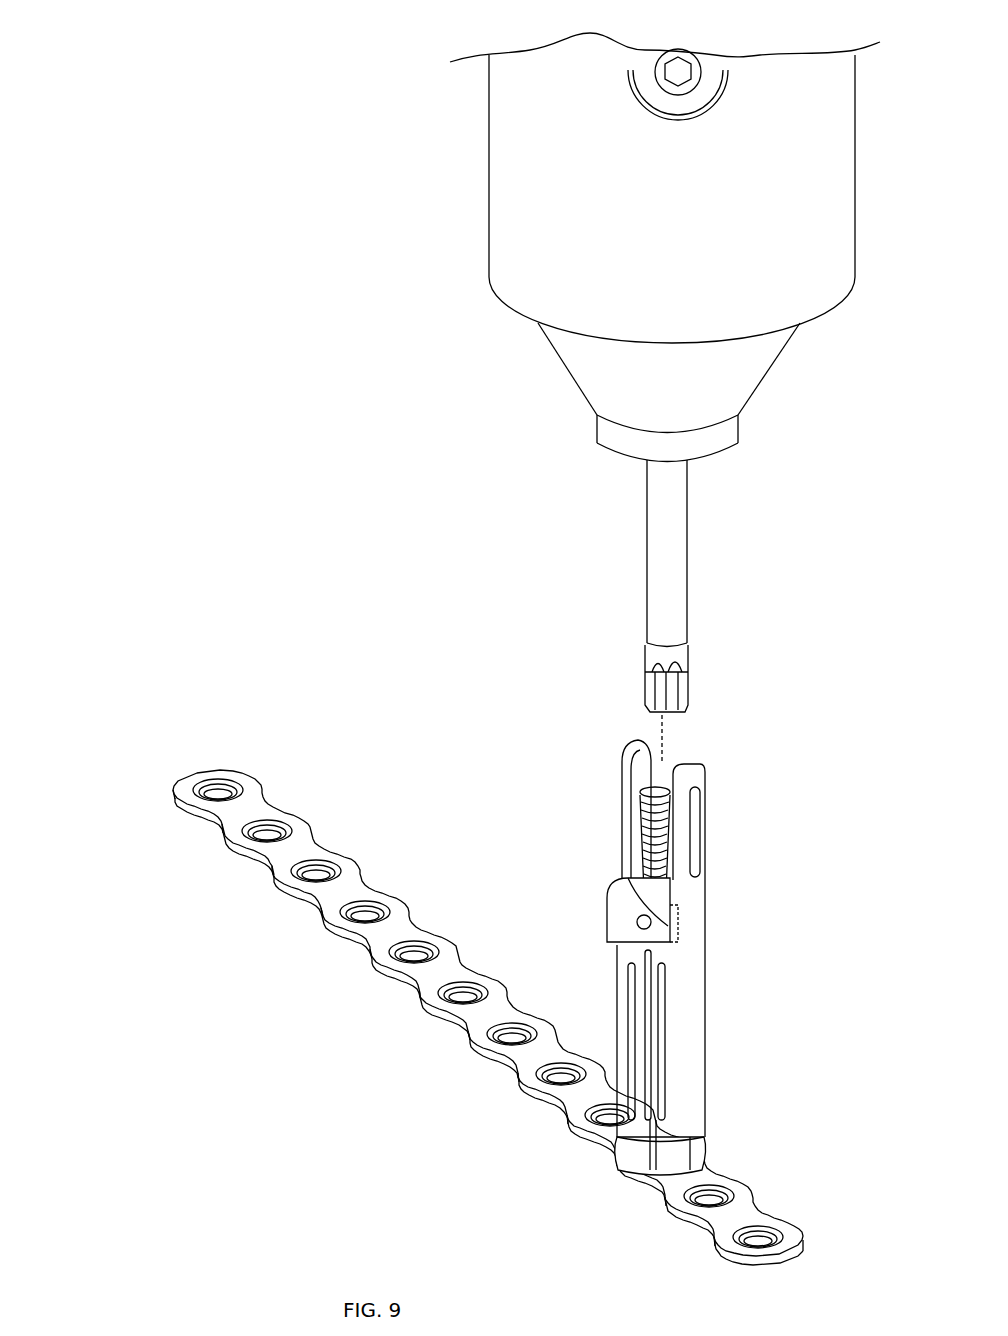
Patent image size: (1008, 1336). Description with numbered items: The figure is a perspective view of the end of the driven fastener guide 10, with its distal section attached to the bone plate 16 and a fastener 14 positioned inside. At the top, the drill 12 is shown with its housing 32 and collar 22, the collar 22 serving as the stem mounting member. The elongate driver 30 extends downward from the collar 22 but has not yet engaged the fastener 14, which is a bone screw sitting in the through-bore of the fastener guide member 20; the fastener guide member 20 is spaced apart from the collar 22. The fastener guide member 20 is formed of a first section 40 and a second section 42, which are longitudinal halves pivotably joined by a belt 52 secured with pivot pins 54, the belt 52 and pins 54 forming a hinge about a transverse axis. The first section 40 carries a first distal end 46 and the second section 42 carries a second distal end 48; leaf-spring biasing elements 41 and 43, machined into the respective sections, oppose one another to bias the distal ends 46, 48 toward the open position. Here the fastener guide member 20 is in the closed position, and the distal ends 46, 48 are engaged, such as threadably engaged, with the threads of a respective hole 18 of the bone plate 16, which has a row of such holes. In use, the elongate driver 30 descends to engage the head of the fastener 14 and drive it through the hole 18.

The driven fastener guide 10 is at (126, 40).
The drill 12 is at (324, 86).
The fastener 14 is at (672, 775).
The bone plate 16 is at (222, 846).
The hole 18 is at (224, 776).
The fastener guide member 20 is at (518, 770).
The collar 22 is at (590, 370).
The elongate driver 30 is at (652, 537).
The housing 32 is at (520, 168).
The first section 40 is at (608, 953).
The biasing element 41 is at (635, 1053).
The second section 42 is at (712, 949).
The biasing element 43 is at (655, 1075).
The first distal end 46 is at (628, 1148).
The second distal end 48 is at (678, 1150).
The belt 52 is at (613, 893).
The pivot pin 54 is at (650, 922).